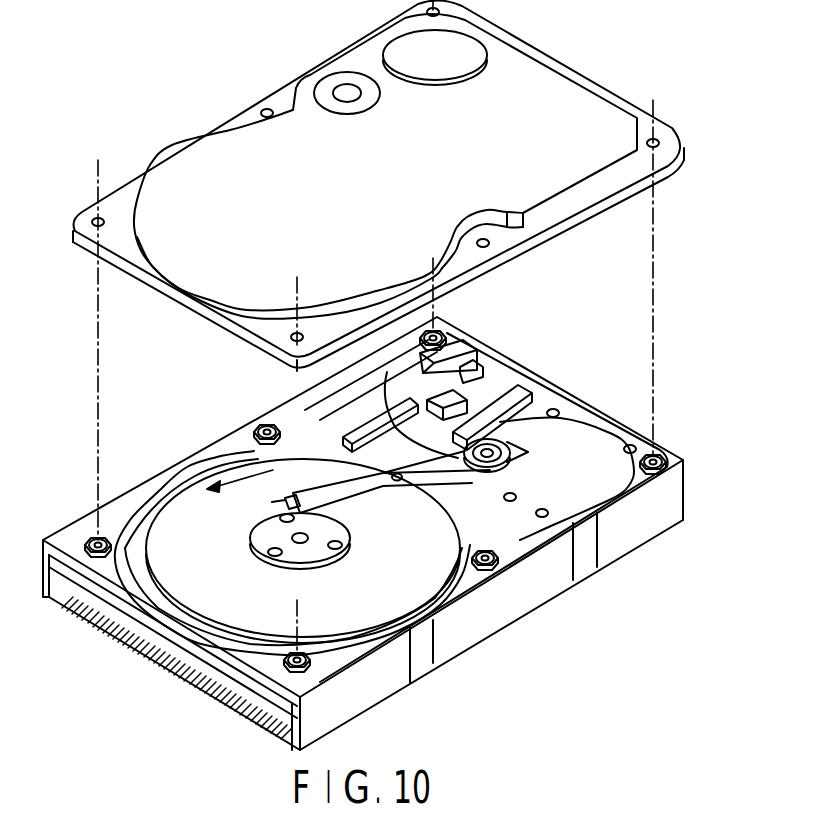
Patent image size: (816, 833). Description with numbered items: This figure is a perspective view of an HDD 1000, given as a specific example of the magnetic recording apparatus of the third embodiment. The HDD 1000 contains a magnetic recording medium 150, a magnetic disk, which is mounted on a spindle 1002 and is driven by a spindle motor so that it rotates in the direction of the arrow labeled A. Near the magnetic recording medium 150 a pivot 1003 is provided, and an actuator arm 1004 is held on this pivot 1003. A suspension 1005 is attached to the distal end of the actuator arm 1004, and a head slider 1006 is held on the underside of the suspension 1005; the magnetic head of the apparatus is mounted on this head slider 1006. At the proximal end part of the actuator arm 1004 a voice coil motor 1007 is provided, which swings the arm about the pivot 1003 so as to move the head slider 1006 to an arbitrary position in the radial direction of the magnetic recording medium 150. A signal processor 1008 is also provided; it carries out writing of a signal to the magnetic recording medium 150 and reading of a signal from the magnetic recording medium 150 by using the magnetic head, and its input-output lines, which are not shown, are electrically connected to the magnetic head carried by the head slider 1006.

The HDD 1000 is at (264, 84).
The magnetic recording medium 150 is at (175, 512).
The spindle 1002 is at (310, 557).
The pivot 1003 is at (518, 452).
The actuator arm 1004 is at (406, 500).
The suspension 1005 is at (306, 502).
The head slider 1006 is at (313, 522).
The voice coil motor 1007 is at (590, 485).
The signal processor 1008 is at (485, 401).